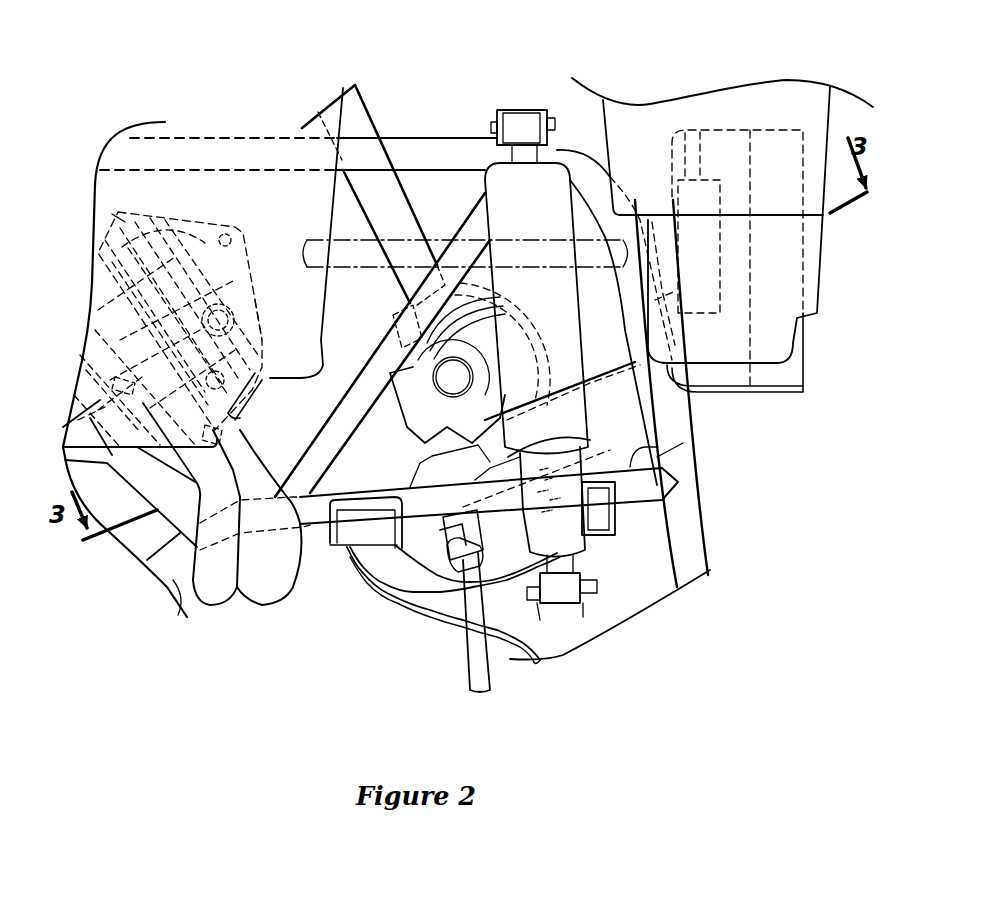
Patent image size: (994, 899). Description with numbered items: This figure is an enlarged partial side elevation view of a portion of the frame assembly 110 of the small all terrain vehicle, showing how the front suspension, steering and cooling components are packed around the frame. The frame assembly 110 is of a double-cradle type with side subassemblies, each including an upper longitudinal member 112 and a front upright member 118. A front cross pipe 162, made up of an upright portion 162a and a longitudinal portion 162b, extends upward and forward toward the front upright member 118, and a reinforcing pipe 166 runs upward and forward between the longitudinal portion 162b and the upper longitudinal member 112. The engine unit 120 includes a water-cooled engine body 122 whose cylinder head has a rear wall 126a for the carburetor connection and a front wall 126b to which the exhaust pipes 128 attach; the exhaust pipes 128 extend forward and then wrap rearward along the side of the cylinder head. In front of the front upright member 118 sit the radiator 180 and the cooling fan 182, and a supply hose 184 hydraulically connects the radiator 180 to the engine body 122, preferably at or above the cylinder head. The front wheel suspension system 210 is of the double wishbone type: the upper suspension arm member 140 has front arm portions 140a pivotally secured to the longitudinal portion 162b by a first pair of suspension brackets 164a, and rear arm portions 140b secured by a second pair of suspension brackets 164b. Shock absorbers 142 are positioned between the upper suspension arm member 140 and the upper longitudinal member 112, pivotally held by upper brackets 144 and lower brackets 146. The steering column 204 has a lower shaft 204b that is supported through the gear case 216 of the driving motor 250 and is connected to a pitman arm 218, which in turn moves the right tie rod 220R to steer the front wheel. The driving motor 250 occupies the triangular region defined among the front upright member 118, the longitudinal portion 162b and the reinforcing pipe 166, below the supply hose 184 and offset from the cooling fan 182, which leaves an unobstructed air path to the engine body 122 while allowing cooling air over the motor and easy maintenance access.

The frame assembly 110 is at (712, 540).
The upper longitudinal member 112 is at (427, 133).
The front upright member 118 is at (700, 500).
The engine unit 120 is at (202, 203).
The engine body 122 is at (112, 214).
The rear wall 126a is at (90, 252).
The front wall 126b is at (277, 370).
The exhaust pipes 128 is at (227, 603).
The upper suspension arm member 140 is at (539, 605).
The front arm portions 140a is at (667, 593).
The rear arm portions 140b is at (372, 582).
The shock absorbers 142 is at (591, 301).
The upper brackets 144 is at (527, 110).
The lower brackets 146 is at (597, 607).
The front cross pipe 162 is at (350, 478).
The upright portion 162a is at (178, 578).
The longitudinal portion 162b is at (683, 443).
The first pair of suspension brackets 164a is at (618, 520).
The second pair of suspension brackets 164b is at (322, 548).
The reinforcing pipe 166 is at (318, 440).
The radiator 180 is at (808, 347).
The cooling fan 182 is at (700, 178).
The supply hose 184 is at (313, 240).
The steering column 204 is at (368, 108).
The lower shaft 204b is at (571, 414).
The front wheel suspension system 210 is at (350, 630).
The gear case 216 is at (390, 318).
The pitman arm 218 is at (492, 523).
The right tie rod 220R is at (467, 663).
The driving motor 250 is at (447, 418).